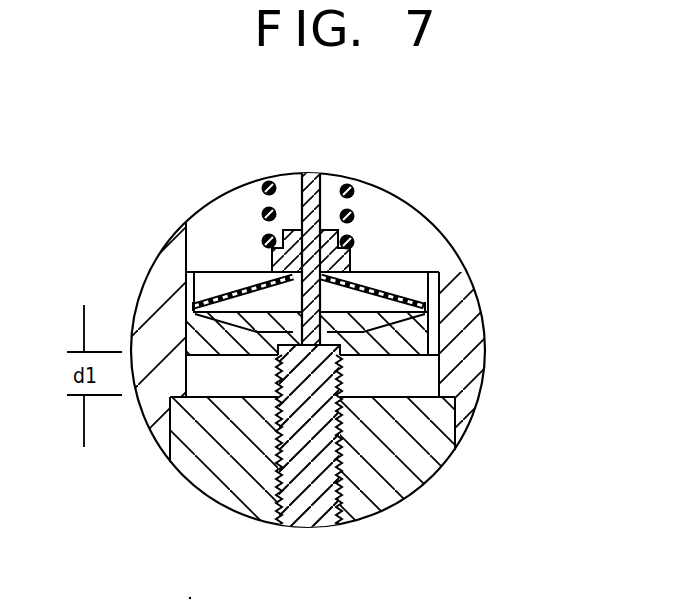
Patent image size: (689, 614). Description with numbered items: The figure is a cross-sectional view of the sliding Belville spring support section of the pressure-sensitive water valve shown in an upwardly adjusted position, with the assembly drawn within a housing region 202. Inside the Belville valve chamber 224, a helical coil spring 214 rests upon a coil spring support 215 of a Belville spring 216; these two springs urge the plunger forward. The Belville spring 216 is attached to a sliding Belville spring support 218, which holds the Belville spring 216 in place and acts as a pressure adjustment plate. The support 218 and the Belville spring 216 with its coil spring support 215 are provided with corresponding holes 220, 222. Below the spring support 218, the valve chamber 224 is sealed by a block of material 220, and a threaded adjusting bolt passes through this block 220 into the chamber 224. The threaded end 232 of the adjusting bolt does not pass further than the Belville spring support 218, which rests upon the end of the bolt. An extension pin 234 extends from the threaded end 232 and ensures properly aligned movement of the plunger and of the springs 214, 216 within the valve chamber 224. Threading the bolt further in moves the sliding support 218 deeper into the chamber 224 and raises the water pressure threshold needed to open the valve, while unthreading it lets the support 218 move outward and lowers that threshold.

The housing 202 is at (460, 369).
The helical coil spring 214 is at (350, 213).
The coil spring support 215 is at (333, 258).
The Belville spring 216 is at (440, 269).
The sliding Belville spring support 218 is at (425, 332).
The block of material 220 is at (449, 329).
The hole 222 is at (176, 241).
The Belville valve chamber 224 is at (243, 237).
The threaded end 232 is at (276, 373).
The extension pin 234 is at (336, 174).